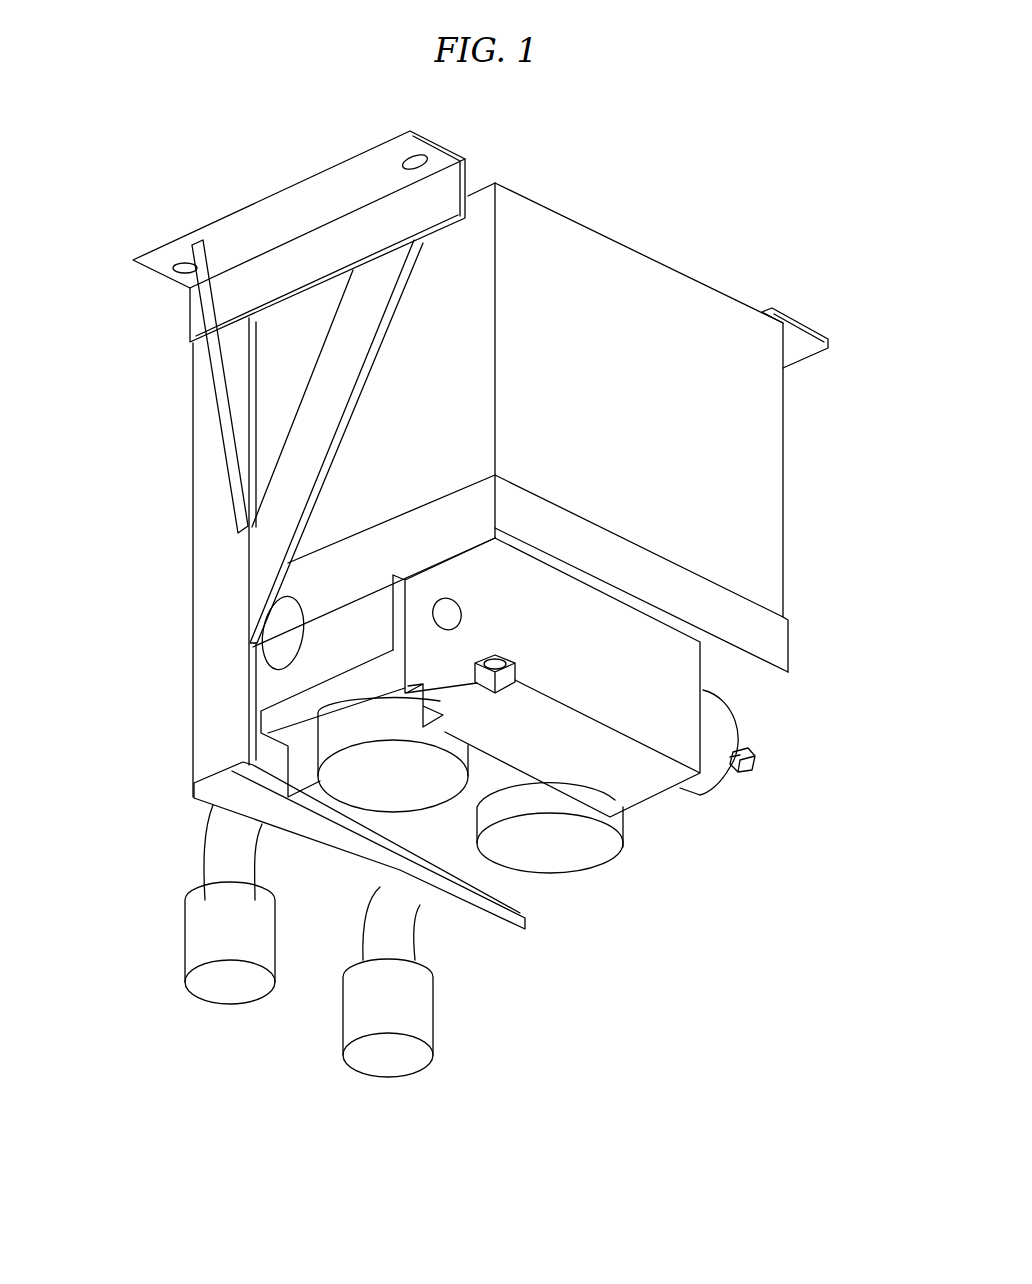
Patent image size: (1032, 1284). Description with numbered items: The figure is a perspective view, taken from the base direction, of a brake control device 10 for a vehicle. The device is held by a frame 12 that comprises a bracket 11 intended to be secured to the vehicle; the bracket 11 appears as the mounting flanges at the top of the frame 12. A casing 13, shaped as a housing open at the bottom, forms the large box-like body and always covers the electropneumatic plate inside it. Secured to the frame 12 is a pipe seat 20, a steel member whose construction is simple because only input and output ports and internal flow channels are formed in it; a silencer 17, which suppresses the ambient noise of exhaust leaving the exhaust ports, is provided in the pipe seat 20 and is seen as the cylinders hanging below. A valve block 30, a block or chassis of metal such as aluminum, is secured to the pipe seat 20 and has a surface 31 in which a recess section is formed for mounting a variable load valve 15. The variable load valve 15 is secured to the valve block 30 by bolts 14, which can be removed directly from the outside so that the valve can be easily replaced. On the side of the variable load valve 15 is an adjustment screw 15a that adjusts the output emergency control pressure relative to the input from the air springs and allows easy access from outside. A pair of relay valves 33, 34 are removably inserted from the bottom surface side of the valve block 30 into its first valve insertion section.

The brake control device 10 is at (697, 254).
The bracket 11 is at (140, 258).
The frame 12 is at (176, 479).
The casing 13 is at (793, 494).
The bolts 14 is at (517, 665).
The variable load valve 15 is at (769, 784).
The adjustment screw 15a is at (757, 760).
The silencer 17 is at (220, 990).
The pipe seat 20 is at (428, 852).
The valve block 30 is at (698, 617).
The surface 31 is at (780, 652).
The relay valve 33 is at (363, 775).
The relay valve 34 is at (270, 658).